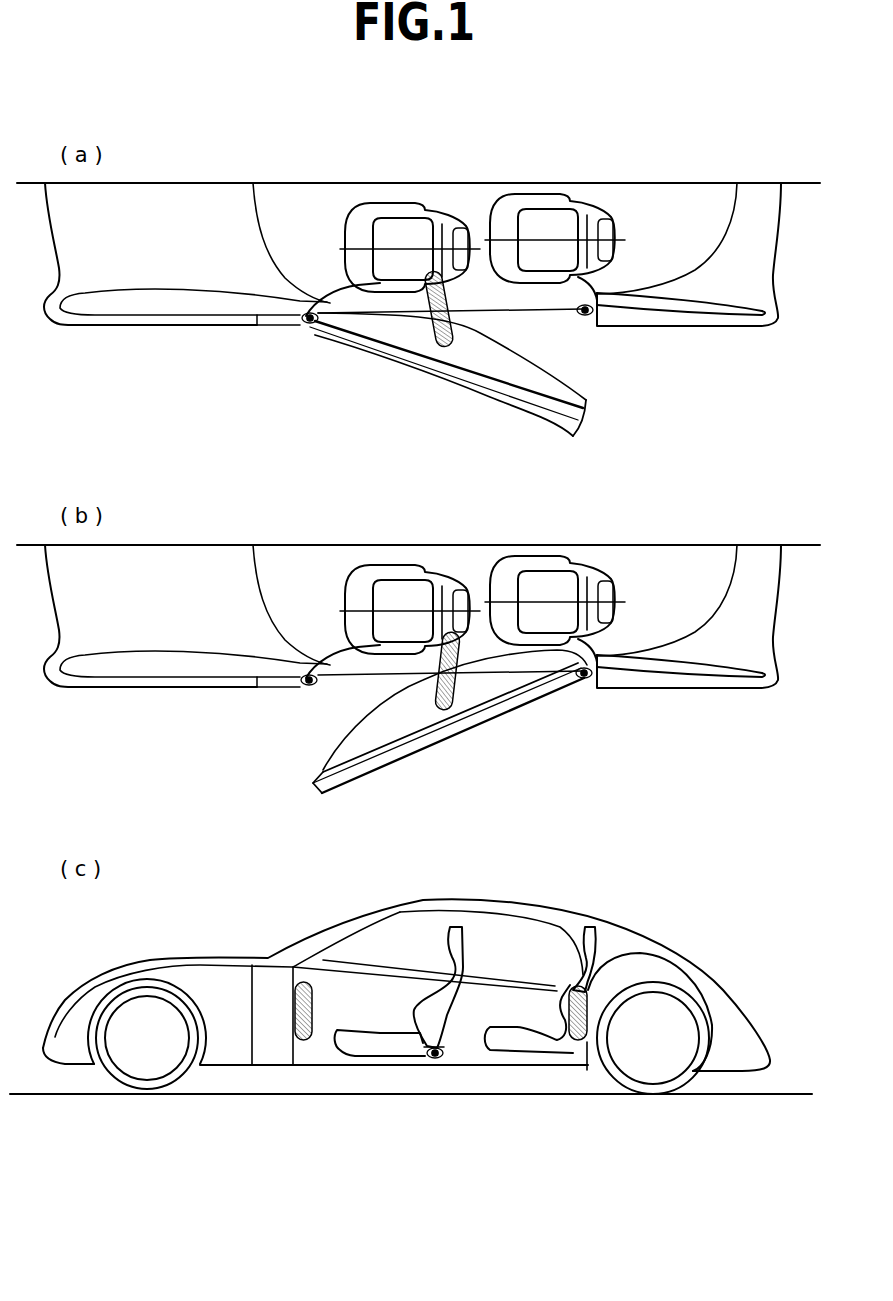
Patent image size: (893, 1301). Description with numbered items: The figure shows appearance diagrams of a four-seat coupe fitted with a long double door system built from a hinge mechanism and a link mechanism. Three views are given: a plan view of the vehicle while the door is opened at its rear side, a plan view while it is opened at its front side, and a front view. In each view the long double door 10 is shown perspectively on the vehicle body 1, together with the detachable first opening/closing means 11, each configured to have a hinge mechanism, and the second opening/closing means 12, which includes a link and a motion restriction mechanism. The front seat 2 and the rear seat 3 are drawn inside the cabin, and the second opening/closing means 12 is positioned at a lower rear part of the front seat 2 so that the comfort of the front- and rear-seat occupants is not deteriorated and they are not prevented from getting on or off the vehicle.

The vehicle body 1 is at (185, 229).
The front seat 2 is at (396, 256).
The rear seat 3 is at (562, 250).
The long double door 10 is at (385, 350).
The first opening/closing means 11 is at (303, 323).
The second opening/closing means 12 is at (440, 287).